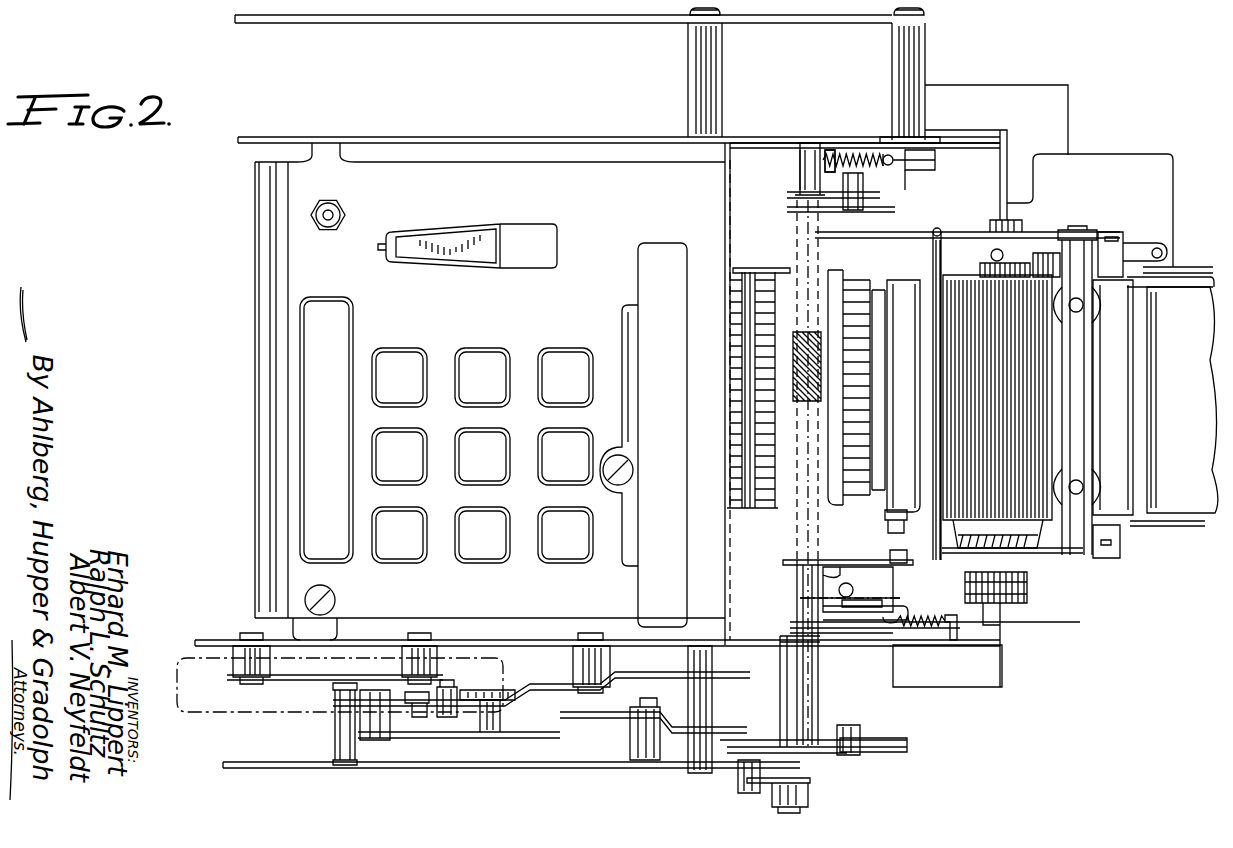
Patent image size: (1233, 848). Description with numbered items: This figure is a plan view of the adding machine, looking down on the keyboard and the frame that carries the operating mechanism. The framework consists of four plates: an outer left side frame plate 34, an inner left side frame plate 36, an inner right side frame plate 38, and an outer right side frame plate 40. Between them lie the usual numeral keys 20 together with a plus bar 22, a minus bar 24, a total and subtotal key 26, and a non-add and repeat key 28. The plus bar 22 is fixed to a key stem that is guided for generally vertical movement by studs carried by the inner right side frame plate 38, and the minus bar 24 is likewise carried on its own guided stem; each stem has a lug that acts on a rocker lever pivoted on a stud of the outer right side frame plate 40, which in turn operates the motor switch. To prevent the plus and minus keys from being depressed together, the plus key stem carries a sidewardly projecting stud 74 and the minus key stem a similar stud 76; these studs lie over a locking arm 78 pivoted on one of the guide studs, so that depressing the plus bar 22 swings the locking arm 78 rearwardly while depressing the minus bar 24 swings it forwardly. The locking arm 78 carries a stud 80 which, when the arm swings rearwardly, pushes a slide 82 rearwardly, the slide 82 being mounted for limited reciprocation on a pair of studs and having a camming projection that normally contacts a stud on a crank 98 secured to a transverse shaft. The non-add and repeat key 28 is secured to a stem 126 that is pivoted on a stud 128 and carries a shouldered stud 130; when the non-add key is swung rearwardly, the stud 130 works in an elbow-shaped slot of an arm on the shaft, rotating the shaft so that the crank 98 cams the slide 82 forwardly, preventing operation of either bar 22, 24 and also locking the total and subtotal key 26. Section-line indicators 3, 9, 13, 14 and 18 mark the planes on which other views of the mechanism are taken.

The outer left side frame plate 34 is at (328, 23).
The inner left side frame plate 36 is at (279, 137).
The inner right side frame plate 38 is at (218, 638).
The outer right side frame plate 40 is at (264, 768).
The numeral keys 20 is at (469, 352).
The plus bar 22 is at (262, 712).
The minus bar 24 is at (552, 724).
The total and subtotal key 26 is at (905, 640).
The non-add and repeat key 28 is at (905, 186).
The stud 74 is at (417, 722).
The stud 76 is at (496, 692).
The locking arm 78 is at (433, 718).
The stud 80 is at (420, 720).
The slide 82 is at (525, 684).
The crank 98 is at (845, 756).
The stem 126 is at (838, 154).
The stud 128 is at (868, 152).
The shouldered stud 130 is at (800, 180).
The section line 14 is at (763, 264).
The section line 13 is at (766, 493).
The section line 18 is at (1031, 144).
The section line 9 is at (755, 632).
The section line 3 is at (210, 736).